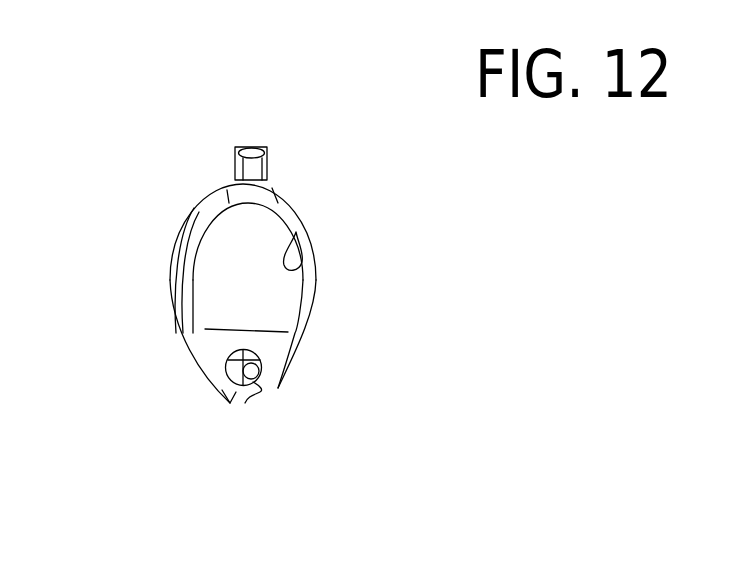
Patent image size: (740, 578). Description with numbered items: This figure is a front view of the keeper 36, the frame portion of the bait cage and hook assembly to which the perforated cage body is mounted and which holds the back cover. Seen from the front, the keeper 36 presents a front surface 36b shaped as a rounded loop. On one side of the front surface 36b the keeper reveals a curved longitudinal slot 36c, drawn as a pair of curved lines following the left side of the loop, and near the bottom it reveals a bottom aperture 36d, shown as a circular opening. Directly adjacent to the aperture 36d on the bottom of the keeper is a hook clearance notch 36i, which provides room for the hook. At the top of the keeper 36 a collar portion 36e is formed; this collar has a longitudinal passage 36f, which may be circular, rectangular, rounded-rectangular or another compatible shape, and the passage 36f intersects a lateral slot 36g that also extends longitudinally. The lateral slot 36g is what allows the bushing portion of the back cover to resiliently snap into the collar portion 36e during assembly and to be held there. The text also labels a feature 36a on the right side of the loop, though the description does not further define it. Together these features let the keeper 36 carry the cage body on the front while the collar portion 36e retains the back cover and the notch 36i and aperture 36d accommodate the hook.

The keeper 36 is at (288, 198).
The slot 36a is at (318, 258).
The front surface 36b is at (273, 346).
The curved longitudinal slot 36c is at (183, 330).
The bottom aperture 36d is at (262, 370).
The collar portion 36e is at (237, 157).
The longitudinal passage 36f is at (258, 148).
The lateral slot 36g is at (268, 164).
The hook clearance notch 36i is at (245, 403).